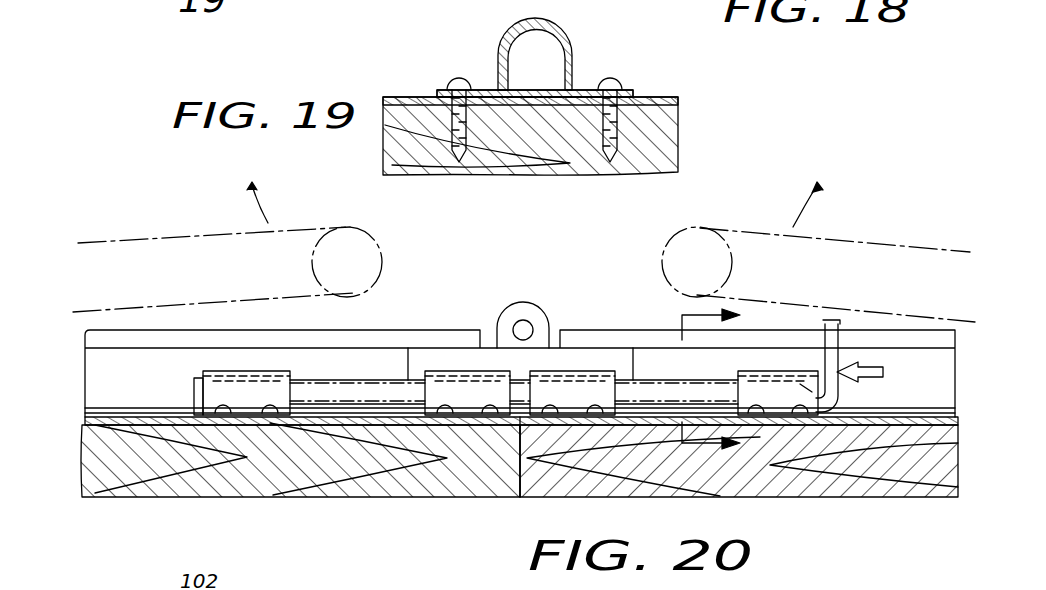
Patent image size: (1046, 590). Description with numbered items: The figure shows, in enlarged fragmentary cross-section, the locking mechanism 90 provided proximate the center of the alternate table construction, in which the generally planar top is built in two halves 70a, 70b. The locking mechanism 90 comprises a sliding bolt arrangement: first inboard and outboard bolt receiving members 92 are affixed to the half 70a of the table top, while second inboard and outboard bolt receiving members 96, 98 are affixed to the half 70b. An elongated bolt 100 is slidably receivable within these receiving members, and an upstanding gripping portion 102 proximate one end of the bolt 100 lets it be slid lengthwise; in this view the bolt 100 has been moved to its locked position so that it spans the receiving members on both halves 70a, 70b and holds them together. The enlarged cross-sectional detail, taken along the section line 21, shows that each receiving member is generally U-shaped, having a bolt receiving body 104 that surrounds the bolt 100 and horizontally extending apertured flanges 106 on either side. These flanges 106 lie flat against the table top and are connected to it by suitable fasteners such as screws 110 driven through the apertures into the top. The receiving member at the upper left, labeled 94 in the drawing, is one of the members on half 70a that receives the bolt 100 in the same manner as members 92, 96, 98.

In FIG. 20, the section line 21- 21 is at (687, 389).
In FIG. 19, the half of the table top 70a is at (536, 165).
In FIG. 20, the half of the table top 70a is at (257, 465).
In FIG. 20, the half of the table top 70b is at (895, 468).
In FIG. 20, the locking mechanism 90 is at (471, 362).
In FIG. 20, the first inboard and outboard bolt receiving members 92 is at (440, 386).
In FIG. 19, the hinge knuckle / dome cap 94 is at (570, 42).
In FIG. 20, the hinge knuckle / dome cap 94 is at (222, 389).
In FIG. 20, the second inboard bolt receiving member 96 is at (576, 386).
In FIG. 20, the second outboard bolt receiving member 98 is at (770, 392).
In FIG. 20, the elongated bolt 100 is at (341, 386).
In FIG. 20, the gripping portion 102 is at (833, 322).
In FIG. 19, the bolt receiving body 104 is at (500, 43).
In FIG. 19, the apertured flanges 106 is at (485, 83).
In FIG. 19, the screws 110 is at (458, 155).
In FIG. 20, the screws 110 is at (800, 384).